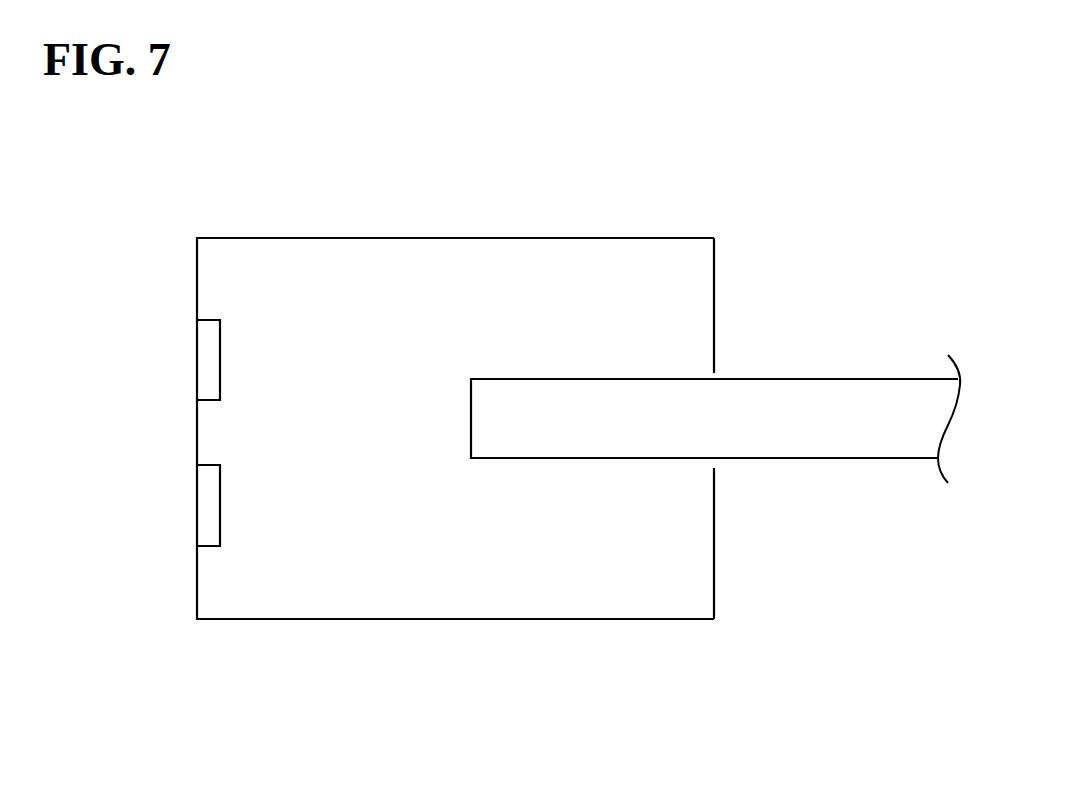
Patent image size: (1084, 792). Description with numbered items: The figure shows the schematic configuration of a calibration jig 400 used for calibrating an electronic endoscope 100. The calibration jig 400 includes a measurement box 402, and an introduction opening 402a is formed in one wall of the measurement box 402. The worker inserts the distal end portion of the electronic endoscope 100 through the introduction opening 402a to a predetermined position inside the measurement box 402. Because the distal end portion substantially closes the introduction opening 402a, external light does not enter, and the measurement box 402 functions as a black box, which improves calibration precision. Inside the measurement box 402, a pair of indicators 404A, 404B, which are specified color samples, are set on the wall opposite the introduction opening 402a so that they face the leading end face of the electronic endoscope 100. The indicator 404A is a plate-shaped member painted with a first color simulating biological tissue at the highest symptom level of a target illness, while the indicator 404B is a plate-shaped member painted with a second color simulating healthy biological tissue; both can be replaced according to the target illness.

The calibration jig 400 is at (575, 218).
The measurement box 402 is at (470, 620).
The introduction opening 402a is at (716, 374).
The indicator (specified color sample) 404A is at (203, 354).
The indicator (specified color sample) 404B is at (203, 506).
The electronic endoscope 100 is at (805, 392).